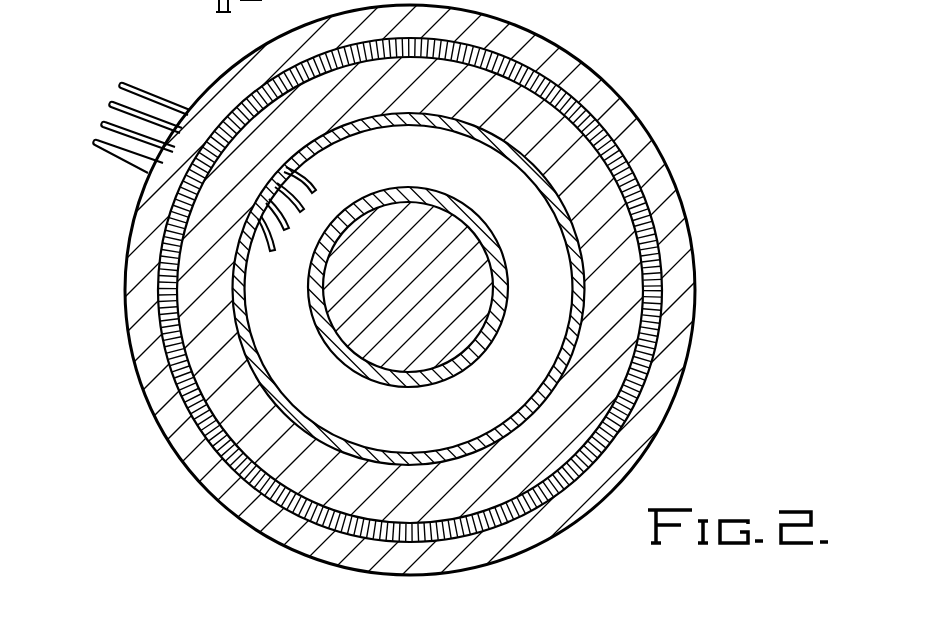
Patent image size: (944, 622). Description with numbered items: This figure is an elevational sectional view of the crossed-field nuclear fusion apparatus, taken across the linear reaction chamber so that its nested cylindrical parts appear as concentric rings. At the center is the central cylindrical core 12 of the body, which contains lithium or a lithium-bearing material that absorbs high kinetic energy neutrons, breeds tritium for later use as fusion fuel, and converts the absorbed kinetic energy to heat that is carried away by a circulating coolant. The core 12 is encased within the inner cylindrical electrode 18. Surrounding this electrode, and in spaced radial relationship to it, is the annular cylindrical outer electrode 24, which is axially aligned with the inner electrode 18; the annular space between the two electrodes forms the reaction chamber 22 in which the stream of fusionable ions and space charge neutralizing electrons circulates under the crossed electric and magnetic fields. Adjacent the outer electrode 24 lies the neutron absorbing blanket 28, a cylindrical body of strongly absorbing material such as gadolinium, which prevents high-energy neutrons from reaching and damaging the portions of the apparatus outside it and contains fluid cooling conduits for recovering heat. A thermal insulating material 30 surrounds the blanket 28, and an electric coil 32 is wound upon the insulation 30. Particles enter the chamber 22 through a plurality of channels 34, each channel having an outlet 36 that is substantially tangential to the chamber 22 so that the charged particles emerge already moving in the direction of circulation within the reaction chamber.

The central cylindrical core 12 is at (419, 291).
The inner cylindrical electrode 18 is at (456, 200).
The reaction chamber 22 is at (432, 424).
The annular cylindrical outer electrode 24 is at (561, 208).
The neutron absorbing blanket 28 is at (628, 291).
The thermal insulating material 30 is at (638, 144).
The electric coil 32 is at (137, 278).
The channels 34 is at (153, 133).
The channel outlets 36 is at (300, 240).